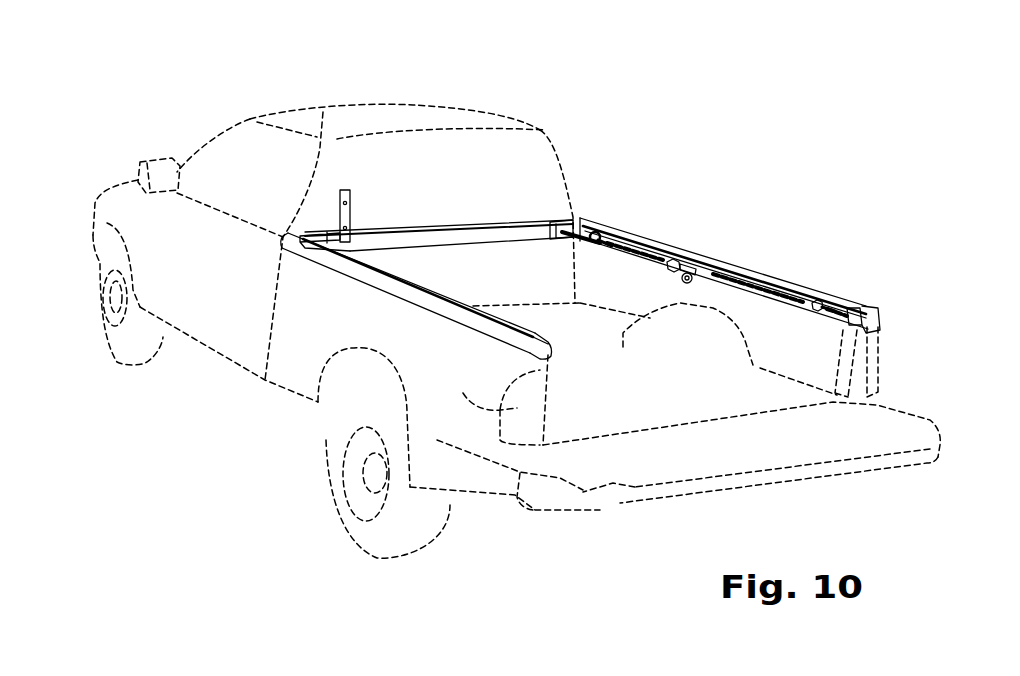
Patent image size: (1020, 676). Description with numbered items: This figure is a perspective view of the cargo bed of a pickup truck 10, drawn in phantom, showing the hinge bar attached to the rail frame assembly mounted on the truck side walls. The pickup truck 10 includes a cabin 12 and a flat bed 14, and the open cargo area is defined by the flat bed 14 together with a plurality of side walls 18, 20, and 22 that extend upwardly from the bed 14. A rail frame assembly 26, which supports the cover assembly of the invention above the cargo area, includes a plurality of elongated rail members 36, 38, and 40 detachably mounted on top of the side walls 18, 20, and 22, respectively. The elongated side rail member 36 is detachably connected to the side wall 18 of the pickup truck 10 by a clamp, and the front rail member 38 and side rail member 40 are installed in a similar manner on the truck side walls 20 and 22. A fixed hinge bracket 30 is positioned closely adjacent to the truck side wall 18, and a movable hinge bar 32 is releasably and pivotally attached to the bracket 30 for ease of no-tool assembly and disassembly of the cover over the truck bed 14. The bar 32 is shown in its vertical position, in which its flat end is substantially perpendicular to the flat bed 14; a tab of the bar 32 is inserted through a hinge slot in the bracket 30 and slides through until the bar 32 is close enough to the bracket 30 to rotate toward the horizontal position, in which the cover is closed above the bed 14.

The pickup truck 10 is at (183, 122).
The cabin 12 is at (323, 110).
The flat bed 14 is at (632, 417).
The side wall 18 is at (493, 402).
The side wall 20 is at (504, 289).
The side wall 22 is at (800, 343).
The rail frame assembly 26 is at (730, 236).
The hinge bracket 30 is at (323, 230).
The hinge bar 32 is at (350, 210).
The side rail member 36 is at (367, 282).
The front rail member 38 is at (470, 237).
The side rail member 40 is at (677, 245).